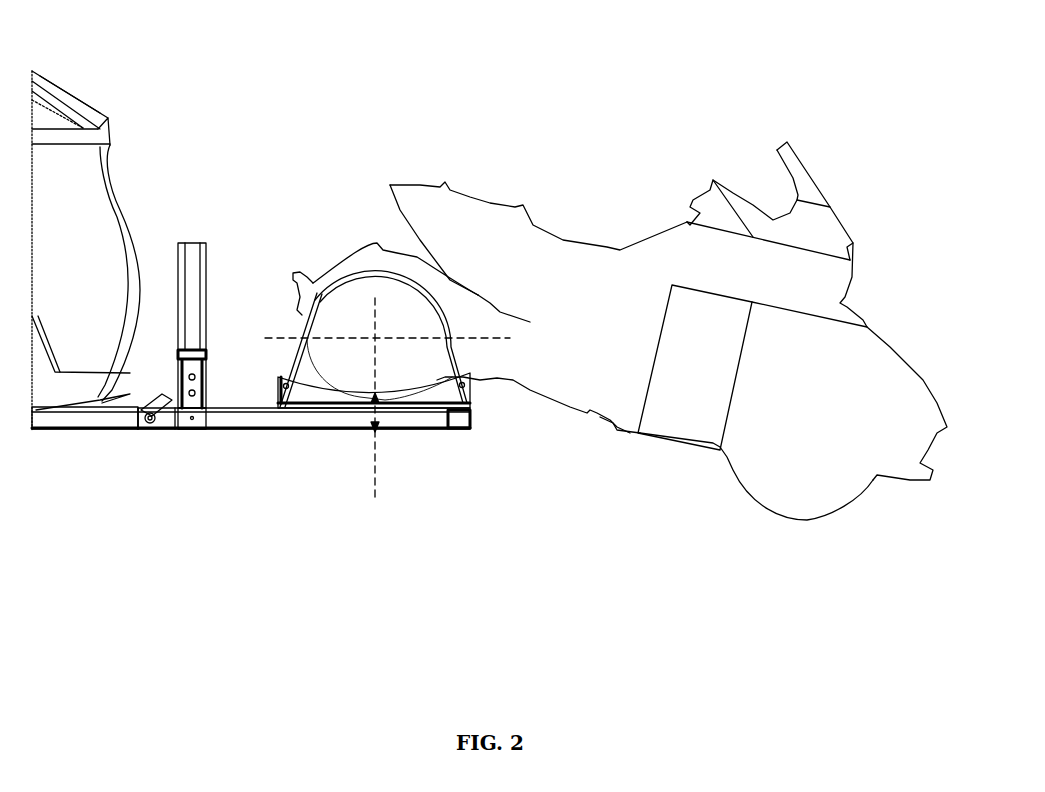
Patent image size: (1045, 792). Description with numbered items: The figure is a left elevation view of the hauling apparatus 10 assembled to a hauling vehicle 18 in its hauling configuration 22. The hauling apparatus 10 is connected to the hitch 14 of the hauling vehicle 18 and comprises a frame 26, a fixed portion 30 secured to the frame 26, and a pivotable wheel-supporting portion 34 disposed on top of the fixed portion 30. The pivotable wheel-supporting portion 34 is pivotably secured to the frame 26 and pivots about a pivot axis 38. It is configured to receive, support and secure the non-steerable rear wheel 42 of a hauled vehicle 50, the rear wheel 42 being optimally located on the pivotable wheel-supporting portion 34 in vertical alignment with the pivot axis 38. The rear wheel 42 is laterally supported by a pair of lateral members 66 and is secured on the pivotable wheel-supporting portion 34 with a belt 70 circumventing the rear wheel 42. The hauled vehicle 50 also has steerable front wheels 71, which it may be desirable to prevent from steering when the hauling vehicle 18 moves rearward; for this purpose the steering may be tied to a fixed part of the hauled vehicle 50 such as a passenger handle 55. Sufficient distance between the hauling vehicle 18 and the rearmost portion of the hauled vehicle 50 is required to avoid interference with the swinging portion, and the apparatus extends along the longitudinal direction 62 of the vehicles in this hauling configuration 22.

The hauling apparatus 10 is at (323, 503).
The hitch 14 is at (85, 421).
The hauling vehicle 18 is at (82, 128).
The hauling configuration 22 is at (828, 165).
The frame 26 is at (240, 421).
The fixed portion 30 is at (437, 420).
The pivotable wheel-supporting portion 34 is at (447, 395).
The pivot axis 38 is at (374, 409).
The non-steerable wheel 42 is at (350, 295).
The hauled vehicle 50 is at (633, 294).
The passenger handle 55 is at (440, 183).
The longitudinal direction 62 is at (374, 338).
The lateral members 66 is at (318, 392).
The belt 70 is at (430, 313).
The steerable front wheels 71 is at (798, 443).